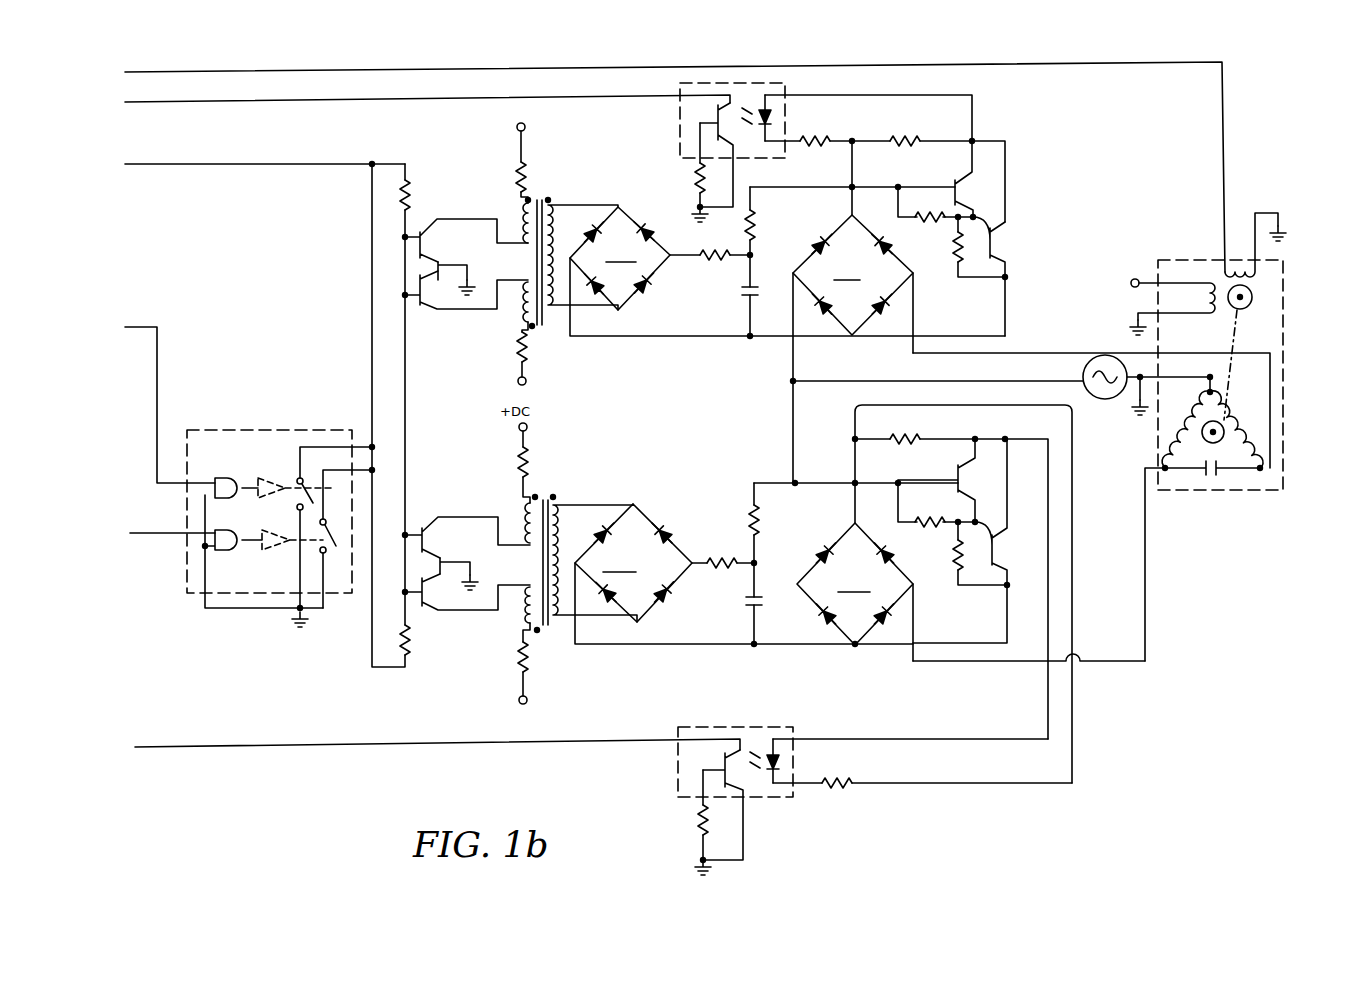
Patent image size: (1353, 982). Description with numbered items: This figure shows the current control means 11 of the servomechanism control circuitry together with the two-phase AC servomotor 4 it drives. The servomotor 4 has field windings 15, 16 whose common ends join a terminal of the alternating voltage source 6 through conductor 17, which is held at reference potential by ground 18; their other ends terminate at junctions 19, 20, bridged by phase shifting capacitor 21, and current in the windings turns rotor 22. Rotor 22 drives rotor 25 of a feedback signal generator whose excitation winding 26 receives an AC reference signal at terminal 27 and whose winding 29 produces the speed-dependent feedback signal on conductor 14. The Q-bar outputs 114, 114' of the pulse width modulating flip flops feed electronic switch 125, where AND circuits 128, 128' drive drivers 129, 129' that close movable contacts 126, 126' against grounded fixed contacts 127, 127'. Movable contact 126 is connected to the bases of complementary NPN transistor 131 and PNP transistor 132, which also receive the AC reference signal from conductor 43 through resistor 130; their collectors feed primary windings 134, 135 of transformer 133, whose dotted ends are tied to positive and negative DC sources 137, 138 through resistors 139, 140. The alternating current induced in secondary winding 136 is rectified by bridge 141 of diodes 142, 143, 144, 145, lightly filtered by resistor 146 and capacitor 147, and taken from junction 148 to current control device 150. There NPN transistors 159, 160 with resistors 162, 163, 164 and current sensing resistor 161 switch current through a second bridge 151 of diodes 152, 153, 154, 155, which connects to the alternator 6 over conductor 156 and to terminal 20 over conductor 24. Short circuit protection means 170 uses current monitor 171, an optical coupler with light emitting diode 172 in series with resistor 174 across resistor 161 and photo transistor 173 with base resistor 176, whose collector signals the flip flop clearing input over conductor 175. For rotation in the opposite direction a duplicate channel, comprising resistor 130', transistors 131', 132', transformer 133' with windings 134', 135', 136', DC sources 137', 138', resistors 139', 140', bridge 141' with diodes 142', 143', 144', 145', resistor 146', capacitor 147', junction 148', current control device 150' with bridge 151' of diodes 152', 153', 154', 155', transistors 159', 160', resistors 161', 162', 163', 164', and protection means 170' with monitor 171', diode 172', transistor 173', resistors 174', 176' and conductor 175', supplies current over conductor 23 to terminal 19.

The conductor 14 is at (192, 72).
The conductor 175 is at (427, 91).
The conductor 43 is at (166, 164).
The Q-bar output 114 is at (170, 393).
The Q-bar output 114' is at (156, 518).
The control line 175' is at (437, 737).
The solid state electronic switch 125 is at (258, 430).
The logical AND circuit 128 is at (223, 469).
The driver 129 is at (285, 472).
The movable contact 126 is at (334, 475).
The fixed contact 127 is at (257, 556).
The logical AND circuit 128' is at (233, 559).
The driver 129' is at (289, 561).
The movable contact 126' is at (346, 508).
The fixed contact 127' is at (342, 577).
The ground 18 is at (490, 275).
The resistor 130 is at (433, 189).
The NPN transistor 131 is at (466, 226).
The PNP transistor 132 is at (466, 304).
The resistor 130' is at (430, 654).
The transistor 131' is at (467, 513).
The transistor 132' is at (467, 607).
The transformer 133 is at (563, 244).
The first primary winding 134 is at (499, 211).
The second primary winding 135 is at (499, 312).
The secondary winding 136 is at (583, 249).
The positive DC voltage source 137 is at (534, 125).
The negative DC voltage source 138 is at (536, 388).
The resistor 139 is at (497, 168).
The resistor 140 is at (544, 347).
The transformer 133' is at (572, 539).
The primary winding 134' is at (502, 511).
The primary winding 135' is at (500, 622).
The secondary winding 136' is at (595, 551).
The DC terminal 137' is at (554, 430).
The DC terminal 138' is at (545, 706).
The resistor 139' is at (494, 460).
The resistor 140' is at (552, 659).
The full wave rectifier bridge 141 is at (620, 258).
The diode 142 is at (608, 216).
The diode 143 is at (635, 208).
The diode 144 is at (597, 303).
The diode 145 is at (655, 296).
The resistor 146 is at (698, 270).
The capacitor 147 is at (725, 298).
The junction 148 is at (778, 261).
The rectifier bridge 141' is at (633, 563).
The diode 142' is at (631, 505).
The diode 143' is at (669, 518).
The diode 144' is at (614, 612).
The diode 145' is at (669, 606).
The resistor 146' is at (708, 545).
The capacitor 147' is at (726, 602).
The output line 148' is at (771, 563).
The current control device 150 is at (1064, 126).
The second full wave rectifier bridge 151 is at (853, 275).
The diode 152 is at (803, 237).
The diode 153 is at (874, 223).
The diode 154 is at (816, 314).
The diode 155 is at (883, 312).
The conductor 156 is at (947, 377).
The NPN transistor 159 is at (935, 179).
The NPN transistor 160 is at (1007, 272).
The resistor 161 is at (922, 129).
The resistor 162 is at (771, 218).
The resistor 163 is at (924, 205).
The resistor 164 is at (955, 247).
The current control device 150' is at (1207, 619).
The diode bridge 151' is at (855, 584).
The diode 152' is at (820, 533).
The diode 153' is at (903, 551).
The diode 154' is at (804, 619).
The diode 155' is at (918, 618).
The transistor 159' is at (936, 480).
The transistor 160' is at (978, 541).
The resistor 161' is at (963, 594).
The resistor 162' is at (733, 500).
The resistor 163' is at (925, 507).
The resistor 164' is at (974, 566).
The short circuit protection means 170 is at (749, 94).
The current monitor 171 is at (638, 88).
The light emitting diode 172 is at (781, 118).
The photo transistor 173 is at (662, 155).
The resistor 174 is at (832, 129).
The resistor 176 is at (667, 165).
The optical coupler 170' is at (755, 787).
The optical coupler housing 171' is at (798, 710).
The light emitting diode 172' is at (798, 761).
The phototransistor 173' is at (684, 805).
The resistor 174' is at (856, 796).
The resistor 176' is at (674, 815).
The conductor 24 is at (1022, 353).
The conductor 23 is at (1106, 663).
The terminal 27 is at (1135, 280).
The excitation winding 26 is at (1212, 295).
The rotor 25 is at (1253, 295).
The winding 29 is at (1230, 265).
The alternating voltage source 6 is at (1105, 398).
The two phase AC servomotor 4 is at (1215, 490).
The conductor 17 is at (1173, 376).
The field winding 15 is at (1184, 425).
The field winding 16 is at (1226, 407).
The junction 19 is at (1155, 463).
The junction 20 is at (1273, 470).
The phase shifting capacitor 21 is at (1217, 470).
The rotor 22 is at (1270, 432).
The current control means 11 is at (698, 664).